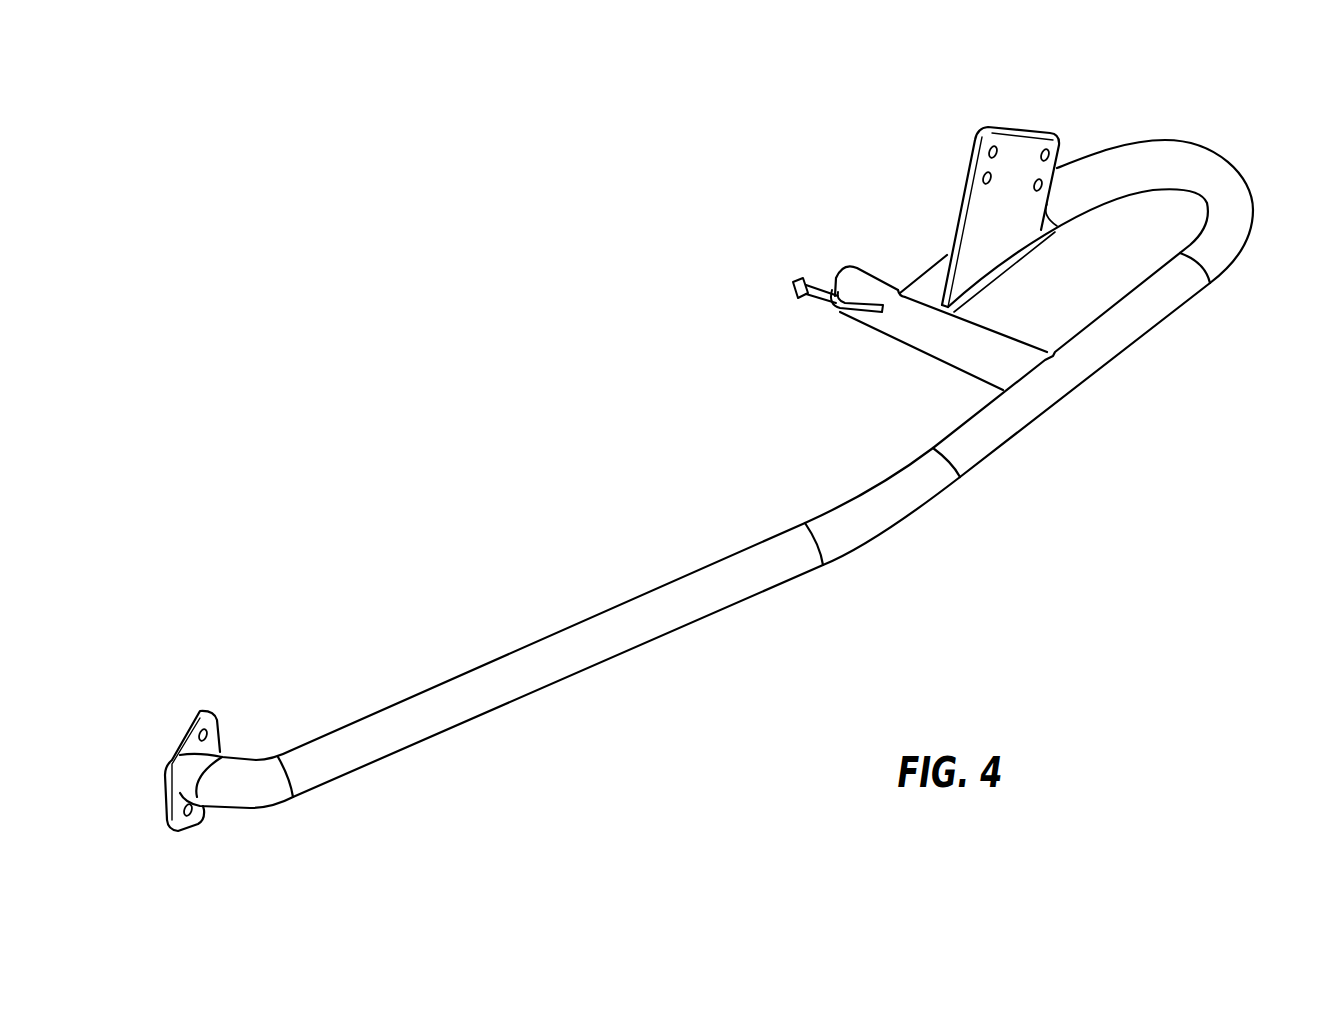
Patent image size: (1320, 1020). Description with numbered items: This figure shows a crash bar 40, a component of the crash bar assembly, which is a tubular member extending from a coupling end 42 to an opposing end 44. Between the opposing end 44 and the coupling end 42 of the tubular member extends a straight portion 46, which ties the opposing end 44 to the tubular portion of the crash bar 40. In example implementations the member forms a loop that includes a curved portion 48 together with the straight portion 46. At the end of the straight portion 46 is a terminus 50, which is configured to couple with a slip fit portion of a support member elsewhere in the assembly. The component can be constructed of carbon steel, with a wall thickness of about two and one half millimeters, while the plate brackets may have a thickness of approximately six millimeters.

The crash bar 40 is at (708, 430).
The coupling end 42 is at (216, 722).
The opposing end 44 is at (924, 268).
The straight portion 46 is at (937, 358).
The curved portion 48 is at (1213, 163).
The terminus 50 is at (882, 215).